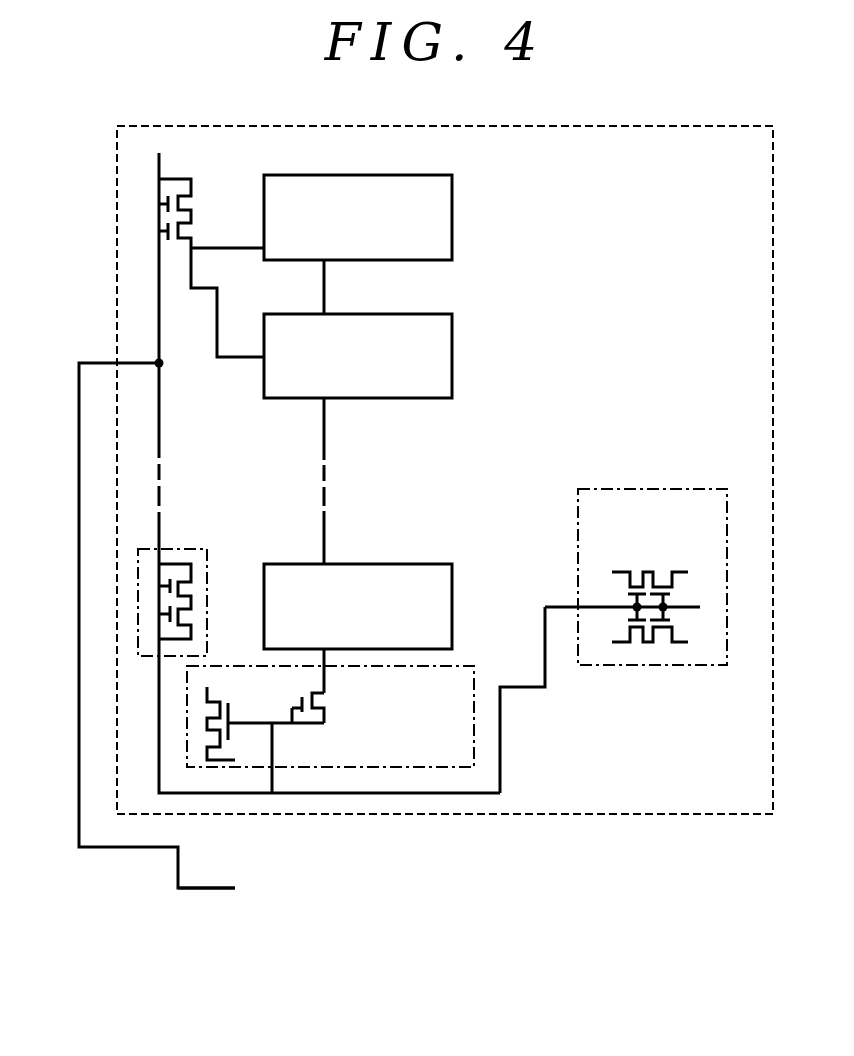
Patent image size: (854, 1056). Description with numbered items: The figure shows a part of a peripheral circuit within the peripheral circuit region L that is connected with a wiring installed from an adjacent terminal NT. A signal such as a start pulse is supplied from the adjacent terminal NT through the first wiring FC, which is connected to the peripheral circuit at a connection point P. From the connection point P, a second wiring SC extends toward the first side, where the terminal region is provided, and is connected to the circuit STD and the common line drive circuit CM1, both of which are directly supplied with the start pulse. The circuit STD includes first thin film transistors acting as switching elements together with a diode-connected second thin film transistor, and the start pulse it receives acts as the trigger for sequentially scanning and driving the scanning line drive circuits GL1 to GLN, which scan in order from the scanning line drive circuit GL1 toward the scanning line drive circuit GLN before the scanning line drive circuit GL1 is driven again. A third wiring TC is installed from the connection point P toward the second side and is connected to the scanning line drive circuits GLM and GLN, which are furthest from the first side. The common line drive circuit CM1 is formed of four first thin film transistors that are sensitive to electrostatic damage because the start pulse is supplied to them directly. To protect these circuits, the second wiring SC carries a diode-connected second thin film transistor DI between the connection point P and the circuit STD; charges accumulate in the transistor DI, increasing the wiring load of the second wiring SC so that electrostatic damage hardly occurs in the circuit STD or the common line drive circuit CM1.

The peripheral circuit region L is at (637, 814).
The third wiring TC is at (159, 277).
The connection point P is at (173, 364).
The first wiring FC is at (79, 598).
The adjacent terminal NT is at (232, 888).
The diode-connected second thin film transistor DI is at (207, 549).
The scanning line drive circuit GLN is at (358, 244).
The scanning line drive circuit GLM is at (358, 439).
The scanning line drive circuit GL1 is at (358, 628).
The circuit directly supplied with a start pulse STD is at (330, 729).
The common line drive circuit CM1 is at (636, 577).
The second wiring SC is at (500, 742).